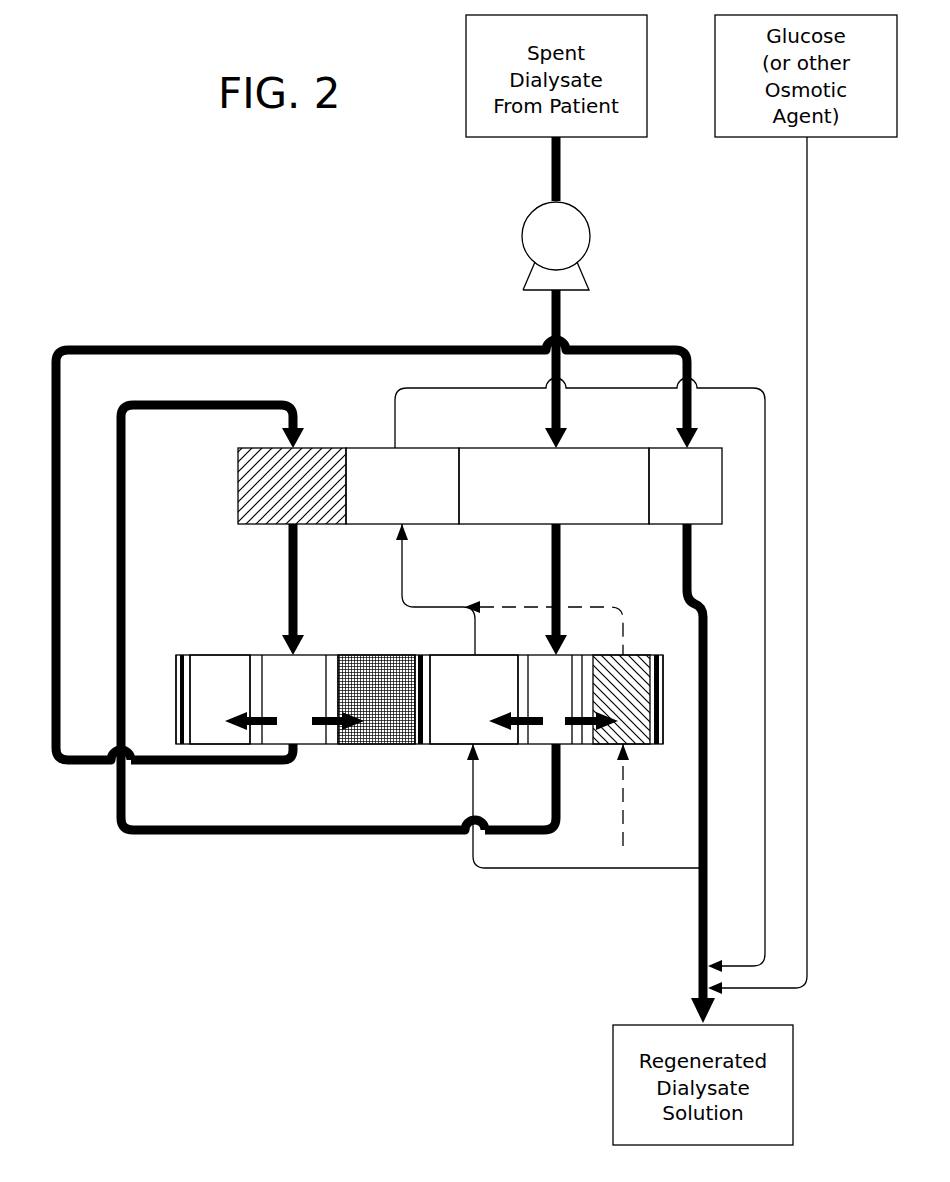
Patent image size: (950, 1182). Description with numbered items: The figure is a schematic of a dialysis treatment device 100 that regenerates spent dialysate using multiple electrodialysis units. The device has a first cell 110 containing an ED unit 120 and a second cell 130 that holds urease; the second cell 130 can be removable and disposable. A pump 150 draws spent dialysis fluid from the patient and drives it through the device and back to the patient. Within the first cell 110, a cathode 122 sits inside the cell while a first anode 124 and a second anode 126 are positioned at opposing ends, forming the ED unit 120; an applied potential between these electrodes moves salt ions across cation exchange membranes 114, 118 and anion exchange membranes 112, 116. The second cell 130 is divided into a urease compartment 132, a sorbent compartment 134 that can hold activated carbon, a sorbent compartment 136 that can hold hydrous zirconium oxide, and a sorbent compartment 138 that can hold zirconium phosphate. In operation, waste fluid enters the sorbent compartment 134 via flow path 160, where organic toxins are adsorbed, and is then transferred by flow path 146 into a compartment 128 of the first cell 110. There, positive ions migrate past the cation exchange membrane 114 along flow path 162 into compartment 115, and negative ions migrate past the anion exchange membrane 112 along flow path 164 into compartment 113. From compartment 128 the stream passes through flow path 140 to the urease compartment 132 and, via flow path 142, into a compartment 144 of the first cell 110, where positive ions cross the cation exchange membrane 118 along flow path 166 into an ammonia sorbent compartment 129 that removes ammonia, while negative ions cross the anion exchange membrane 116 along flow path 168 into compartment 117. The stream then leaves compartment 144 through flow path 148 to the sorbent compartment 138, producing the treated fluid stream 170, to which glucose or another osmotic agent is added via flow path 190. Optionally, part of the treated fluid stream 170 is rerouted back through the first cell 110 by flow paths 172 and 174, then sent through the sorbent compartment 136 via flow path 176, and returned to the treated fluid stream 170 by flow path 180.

The dialysis treatment device 100 is at (160, 245).
The first cell 110 is at (414, 707).
The anion exchange membrane 112 is at (585, 740).
The compartment 113 is at (636, 660).
The cation exchange membrane 114 is at (522, 740).
The compartment 115 is at (456, 672).
The anion exchange membrane 116 is at (257, 740).
The compartment 117 is at (236, 672).
The cation exchange membrane 118 is at (330, 737).
The ED unit 120 is at (168, 668).
The cathode 122 is at (422, 747).
The first anode 124 is at (176, 715).
The second anode 126 is at (663, 705).
The compartment 128 is at (558, 730).
The ammonia sorbent compartment 129 is at (380, 727).
The second cell 130 is at (466, 455).
The urease compartment 132 is at (318, 472).
The sorbent compartment 134 is at (607, 465).
The sorbent compartment 136 is at (421, 470).
The sorbent compartment 138 is at (707, 465).
The flow path 140 is at (124, 577).
The flow path 142 is at (298, 589).
The compartment 144 is at (293, 752).
The flow path 146 is at (562, 570).
The flow path 148 is at (60, 618).
The pump 150 is at (570, 228).
The flow path 160 is at (561, 168).
The flow path 162 is at (497, 710).
The flow path 164 is at (566, 718).
The flow path 166 is at (293, 717).
The flow path 168 is at (228, 722).
The treated fluid stream 170 is at (708, 918).
The flow path 172 is at (623, 850).
The flow path 174 is at (473, 862).
The flow path 176 is at (437, 607).
The flow path 180 is at (765, 545).
The flow path 190 is at (807, 445).